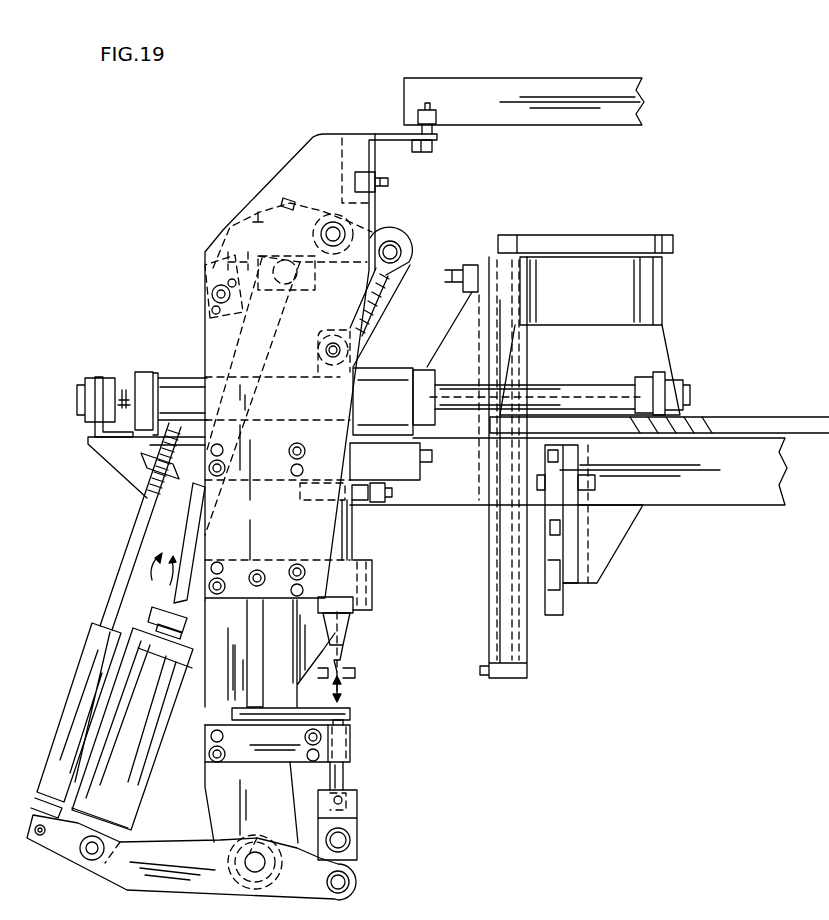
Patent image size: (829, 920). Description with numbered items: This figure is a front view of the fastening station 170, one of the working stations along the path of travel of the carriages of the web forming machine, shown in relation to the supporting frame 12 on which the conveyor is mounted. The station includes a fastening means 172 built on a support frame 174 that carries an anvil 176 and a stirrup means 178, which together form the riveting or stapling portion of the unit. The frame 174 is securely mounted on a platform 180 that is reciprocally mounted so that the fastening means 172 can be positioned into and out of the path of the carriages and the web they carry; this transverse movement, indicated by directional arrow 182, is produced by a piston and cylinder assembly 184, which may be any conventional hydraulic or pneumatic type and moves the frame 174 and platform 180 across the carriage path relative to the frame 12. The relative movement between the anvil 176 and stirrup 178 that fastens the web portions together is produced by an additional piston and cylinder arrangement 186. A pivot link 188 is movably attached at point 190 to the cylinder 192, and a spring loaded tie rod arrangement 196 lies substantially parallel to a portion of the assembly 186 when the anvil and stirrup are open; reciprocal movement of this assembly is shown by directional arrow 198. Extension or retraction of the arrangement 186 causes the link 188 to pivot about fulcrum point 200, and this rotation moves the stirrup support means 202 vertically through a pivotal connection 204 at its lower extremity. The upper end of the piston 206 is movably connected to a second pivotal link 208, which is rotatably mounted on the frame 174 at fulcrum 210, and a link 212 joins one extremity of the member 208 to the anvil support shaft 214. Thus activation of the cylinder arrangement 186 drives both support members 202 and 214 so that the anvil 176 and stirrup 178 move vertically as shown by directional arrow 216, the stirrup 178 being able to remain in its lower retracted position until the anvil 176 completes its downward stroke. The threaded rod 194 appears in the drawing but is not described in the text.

The supporting frame 12 is at (698, 490).
The fastening station 170 is at (385, 55).
The fastening means 172 is at (276, 173).
The support frame 174 is at (205, 280).
The anvil 176 is at (347, 662).
The stirrup means 178 is at (352, 718).
The platform 180 is at (405, 470).
The directional arrow 182 is at (502, 375).
The piston and cylinder assembly 184 is at (392, 378).
The piston and cylinder arrangement 186 is at (183, 737).
The pivot link 188 is at (125, 878).
The attachment point 190 is at (88, 860).
The cylinder 192 is at (138, 795).
The piston rod 194 is at (124, 540).
The spring loaded tie rod arrangement 196 is at (76, 658).
The directional arrow 198 is at (152, 579).
The fulcrum point 200 is at (258, 872).
The stirrup support means 202 is at (360, 813).
The pivotal connection 204 is at (350, 882).
The piston 206 is at (248, 381).
The second pivotal link 208 is at (256, 205).
The fulcrum 210 is at (333, 234).
The link 212 is at (390, 295).
The anvil support shaft 214 is at (355, 530).
The directional arrow 216 is at (352, 688).